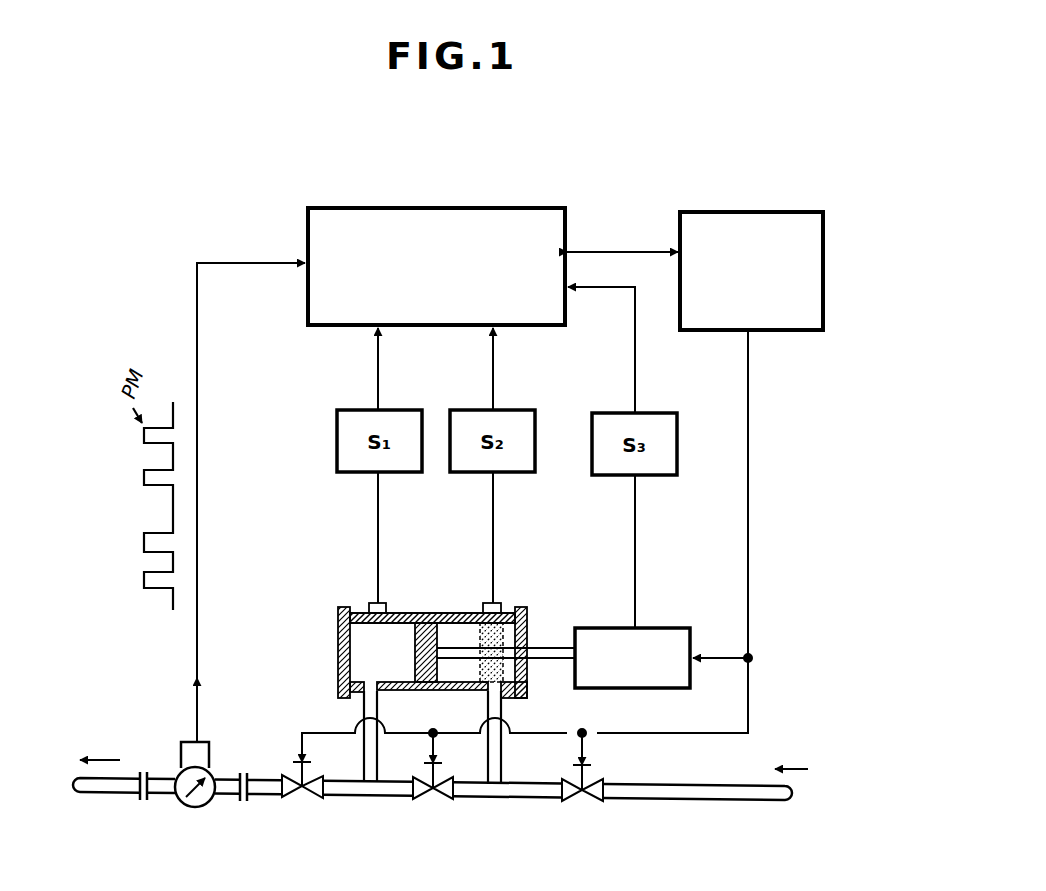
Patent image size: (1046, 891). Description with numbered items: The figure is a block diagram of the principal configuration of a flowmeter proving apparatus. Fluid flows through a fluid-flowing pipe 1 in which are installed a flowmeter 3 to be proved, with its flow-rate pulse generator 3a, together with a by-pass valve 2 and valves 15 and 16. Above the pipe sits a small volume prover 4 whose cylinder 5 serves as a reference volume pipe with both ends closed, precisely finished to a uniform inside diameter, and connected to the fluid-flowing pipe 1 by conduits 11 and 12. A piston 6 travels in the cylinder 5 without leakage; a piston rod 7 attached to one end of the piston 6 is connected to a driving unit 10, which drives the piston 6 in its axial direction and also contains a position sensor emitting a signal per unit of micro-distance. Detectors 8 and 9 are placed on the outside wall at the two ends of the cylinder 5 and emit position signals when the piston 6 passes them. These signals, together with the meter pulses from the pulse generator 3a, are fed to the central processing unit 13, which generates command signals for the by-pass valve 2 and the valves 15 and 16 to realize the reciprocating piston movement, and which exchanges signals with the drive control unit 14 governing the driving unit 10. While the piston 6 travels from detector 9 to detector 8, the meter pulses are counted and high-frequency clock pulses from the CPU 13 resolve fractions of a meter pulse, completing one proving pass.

The fluid-flowing pipe 1 is at (718, 801).
The by-pass valve 2 is at (431, 803).
The flowmeter 3 is at (195, 808).
The flow-rate pulse generator 3a is at (182, 750).
The small volume prover 4 is at (531, 610).
The cylinder 5 is at (400, 612).
The piston 6 is at (424, 691).
The piston rod 7 is at (441, 622).
The detector 8 is at (368, 606).
The detector 9 is at (497, 606).
The driving unit 10 is at (672, 628).
The conduit 11 is at (501, 762).
The conduit 12 is at (363, 758).
The central processing unit 13 is at (497, 206).
The drive control unit 14 is at (779, 212).
The valve 15 is at (303, 803).
The valve 16 is at (582, 805).